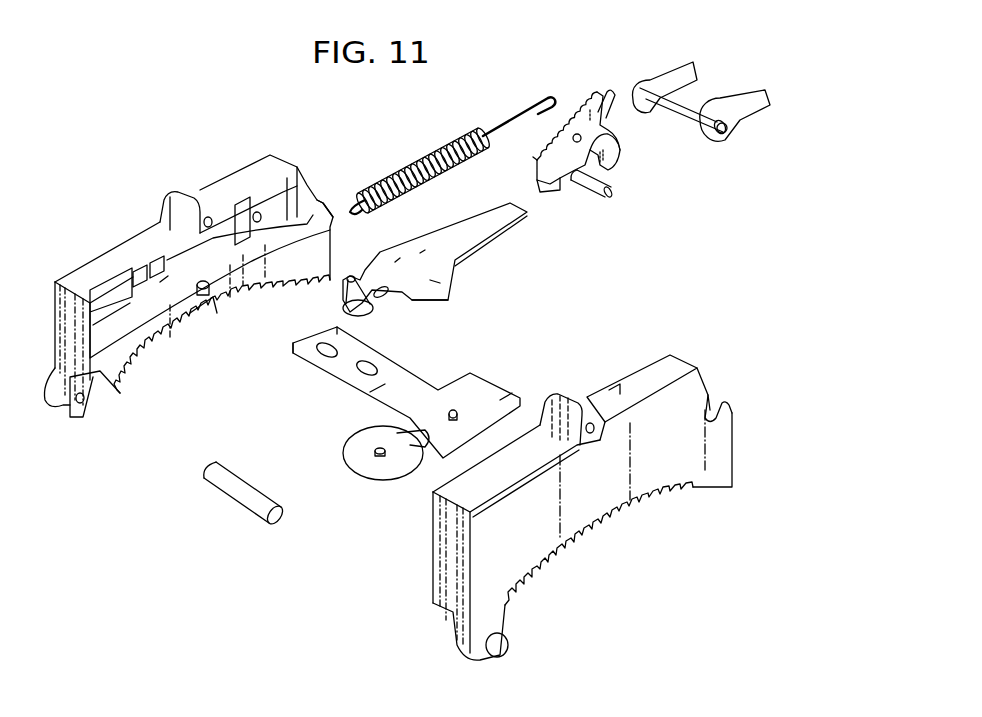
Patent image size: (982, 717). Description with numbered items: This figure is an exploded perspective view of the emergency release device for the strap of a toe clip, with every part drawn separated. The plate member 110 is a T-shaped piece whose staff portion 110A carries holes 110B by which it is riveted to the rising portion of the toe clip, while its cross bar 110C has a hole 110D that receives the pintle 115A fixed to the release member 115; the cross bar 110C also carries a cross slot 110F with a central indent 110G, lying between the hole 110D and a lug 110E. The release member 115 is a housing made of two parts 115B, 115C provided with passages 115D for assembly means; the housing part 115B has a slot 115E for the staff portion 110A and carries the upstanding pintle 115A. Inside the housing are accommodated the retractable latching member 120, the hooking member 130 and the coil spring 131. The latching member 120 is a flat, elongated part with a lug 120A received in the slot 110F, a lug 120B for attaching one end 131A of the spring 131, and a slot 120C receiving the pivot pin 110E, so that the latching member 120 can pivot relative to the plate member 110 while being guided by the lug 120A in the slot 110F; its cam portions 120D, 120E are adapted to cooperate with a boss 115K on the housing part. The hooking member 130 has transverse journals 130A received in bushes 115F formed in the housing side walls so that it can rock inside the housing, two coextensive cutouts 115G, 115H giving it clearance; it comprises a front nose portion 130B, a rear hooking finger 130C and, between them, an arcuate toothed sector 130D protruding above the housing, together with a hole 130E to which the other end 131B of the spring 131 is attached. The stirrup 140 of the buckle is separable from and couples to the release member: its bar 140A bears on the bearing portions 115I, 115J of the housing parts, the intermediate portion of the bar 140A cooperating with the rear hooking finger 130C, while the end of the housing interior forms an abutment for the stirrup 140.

The plate member 110 is at (385, 431).
The staff portion 110A is at (377, 388).
The holes 110B is at (367, 374).
The cross bar 110C is at (455, 410).
The hole 110D is at (457, 410).
The lug 110E is at (353, 480).
The cross slot 110F is at (417, 443).
The central indent 110G is at (407, 435).
The release member 115 is at (417, 396).
The pintle 115A is at (210, 292).
The housing part 115B is at (105, 273).
The housing part 115C is at (687, 392).
The passages 115D is at (211, 224).
The slot 115E is at (177, 262).
The bushes 115F is at (257, 212).
The cutout 115G is at (259, 213).
The cutout 115H is at (662, 358).
The bearing portion 115I is at (320, 210).
The bearing portion 115J is at (717, 405).
The boss 115K is at (157, 272).
The retractable latching member 120 is at (449, 277).
The lug 120A is at (430, 299).
The lug 120B is at (353, 277).
The slot 120C is at (387, 296).
The cam portion 120D is at (395, 260).
The cam portion 120E is at (440, 283).
The hooking member 130 is at (610, 132).
The transverse journals 130A is at (608, 193).
The front nose portion 130B is at (550, 184).
The rear hooking finger 130C is at (620, 157).
The toothed sector 130D is at (587, 107).
The hole 130E is at (587, 140).
The coil spring 131 is at (437, 140).
The spring hook 131A is at (352, 205).
The spring end 131B is at (540, 98).
The stirrup 140 is at (701, 75).
The bar 140A is at (735, 95).